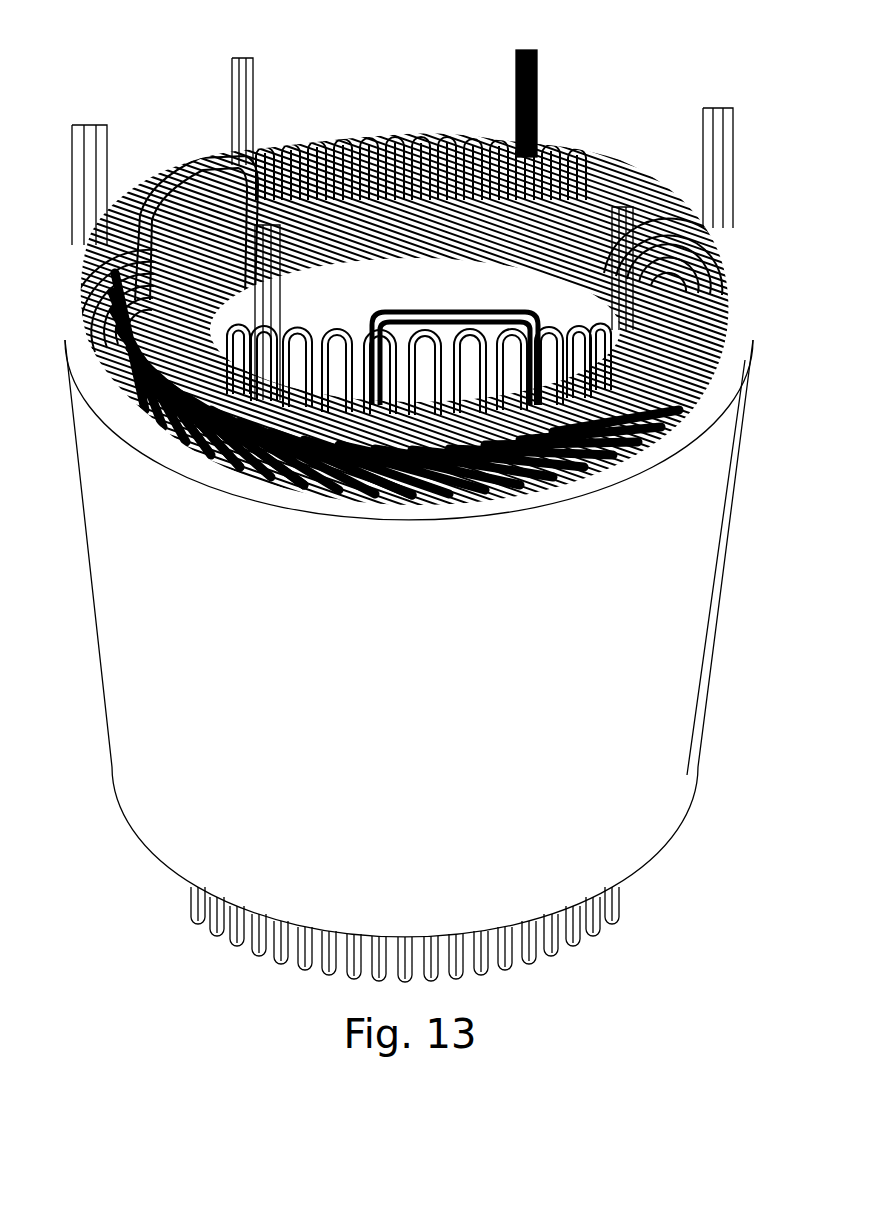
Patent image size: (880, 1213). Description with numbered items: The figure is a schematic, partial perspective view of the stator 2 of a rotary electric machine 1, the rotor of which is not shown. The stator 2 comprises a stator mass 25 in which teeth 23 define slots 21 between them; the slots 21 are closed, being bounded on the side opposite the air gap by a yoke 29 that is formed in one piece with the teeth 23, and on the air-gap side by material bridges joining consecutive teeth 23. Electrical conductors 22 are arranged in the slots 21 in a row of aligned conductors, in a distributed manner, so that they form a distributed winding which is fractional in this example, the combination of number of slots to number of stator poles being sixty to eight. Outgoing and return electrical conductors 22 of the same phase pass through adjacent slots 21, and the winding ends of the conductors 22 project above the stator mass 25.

The rotary electric machine 1 is at (620, 118).
The stator 2 is at (372, 120).
The slots 21 is at (316, 487).
The electrical conductors 22 is at (118, 165).
The teeth 23 is at (411, 487).
The stator mass 25 is at (586, 516).
The yoke 29 is at (245, 487).